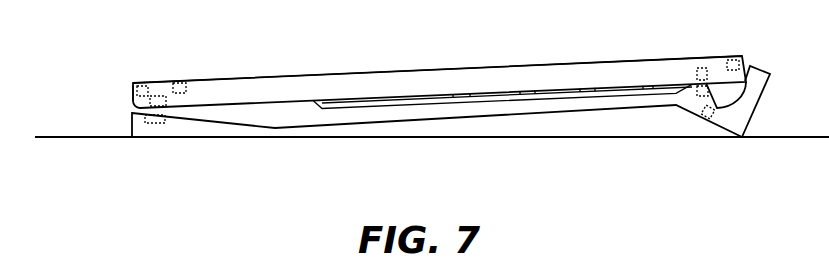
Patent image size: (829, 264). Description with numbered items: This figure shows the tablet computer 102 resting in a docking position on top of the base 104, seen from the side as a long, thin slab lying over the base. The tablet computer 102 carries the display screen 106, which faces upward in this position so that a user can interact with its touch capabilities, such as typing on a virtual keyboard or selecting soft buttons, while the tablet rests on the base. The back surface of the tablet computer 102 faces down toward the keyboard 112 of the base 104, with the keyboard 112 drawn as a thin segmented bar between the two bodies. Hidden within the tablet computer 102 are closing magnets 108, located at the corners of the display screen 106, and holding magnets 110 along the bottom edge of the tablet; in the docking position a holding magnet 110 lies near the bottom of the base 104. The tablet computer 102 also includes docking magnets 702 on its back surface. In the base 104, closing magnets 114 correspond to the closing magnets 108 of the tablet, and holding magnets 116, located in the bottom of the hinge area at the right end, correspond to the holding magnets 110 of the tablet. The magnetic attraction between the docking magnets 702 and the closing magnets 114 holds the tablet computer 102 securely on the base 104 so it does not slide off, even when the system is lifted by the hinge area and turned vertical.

The tablet computer 102 is at (403, 82).
The base 104 is at (372, 118).
The display screen 106 is at (536, 66).
The closing magnets 108 is at (181, 83).
The holding magnets 110 is at (132, 102).
The keyboard 112 is at (498, 98).
The closing magnets 114 is at (160, 124).
The holding magnets 116 is at (708, 119).
The docking magnets 702 is at (160, 95).